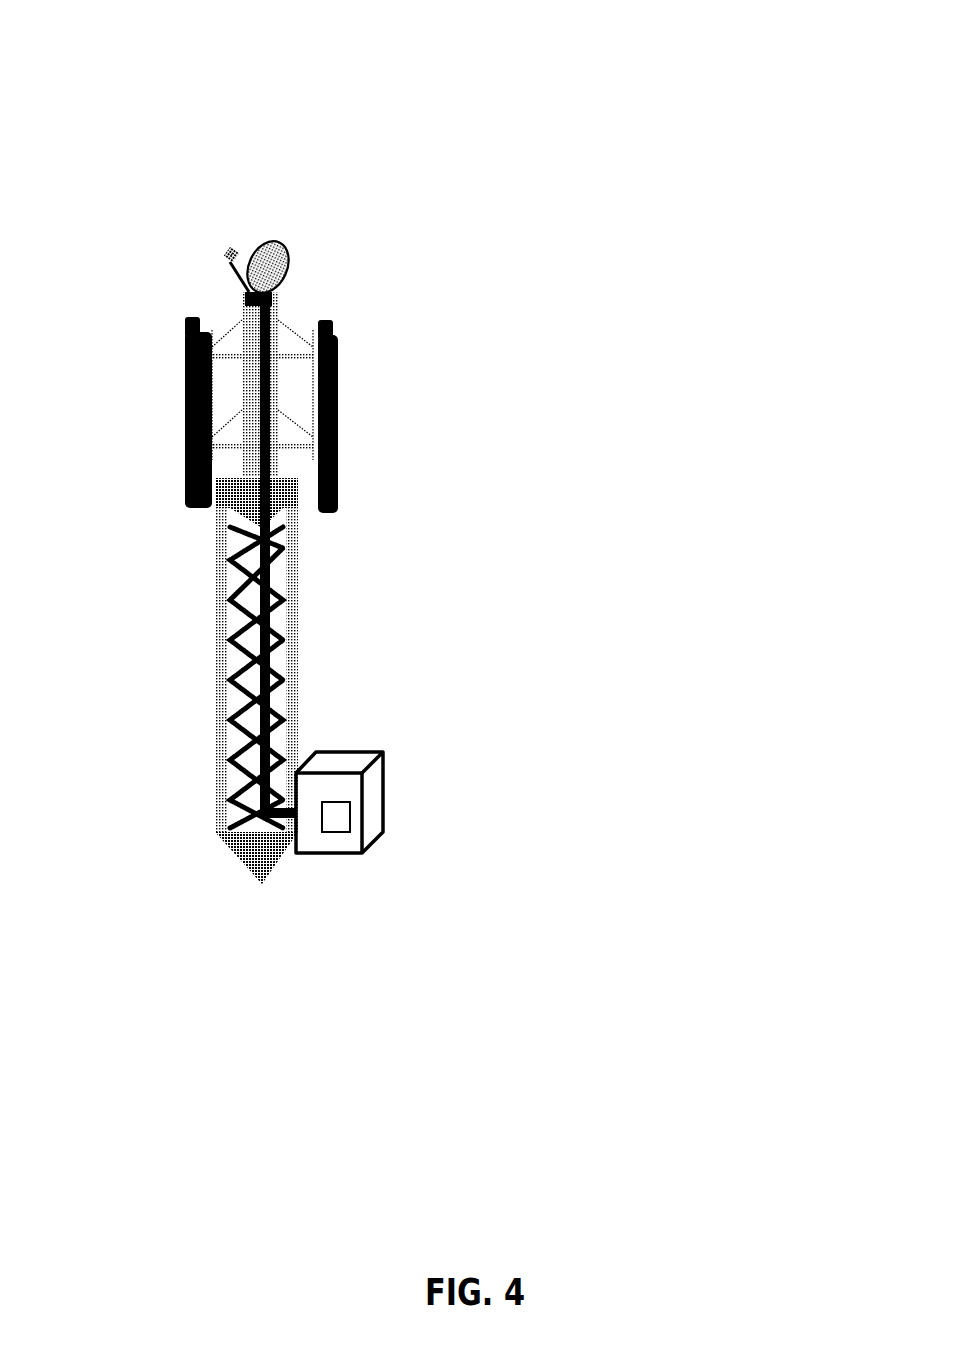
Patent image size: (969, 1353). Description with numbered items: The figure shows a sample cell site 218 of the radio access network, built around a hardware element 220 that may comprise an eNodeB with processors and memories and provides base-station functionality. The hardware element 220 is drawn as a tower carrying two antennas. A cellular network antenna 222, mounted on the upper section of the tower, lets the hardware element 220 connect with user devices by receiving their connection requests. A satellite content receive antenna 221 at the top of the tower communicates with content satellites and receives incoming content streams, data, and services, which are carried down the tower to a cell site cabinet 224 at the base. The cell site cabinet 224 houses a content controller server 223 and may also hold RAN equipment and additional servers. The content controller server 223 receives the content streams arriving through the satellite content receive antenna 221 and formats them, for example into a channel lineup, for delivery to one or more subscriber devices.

The cell site 218 is at (513, 103).
The hardware element 220 is at (217, 613).
The satellite content receive antenna 221 is at (238, 280).
The cellular network antenna 222 is at (338, 358).
The content controller server 223 is at (339, 832).
The cell site cabinet 224 is at (383, 752).